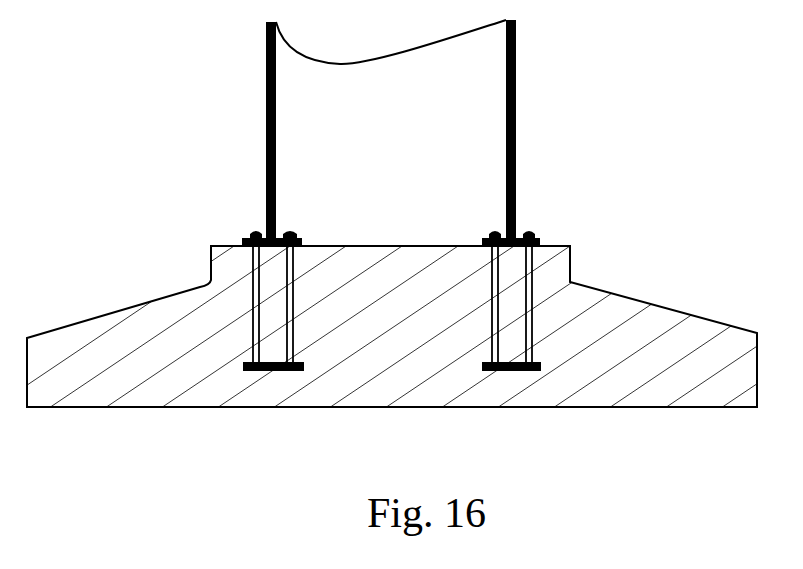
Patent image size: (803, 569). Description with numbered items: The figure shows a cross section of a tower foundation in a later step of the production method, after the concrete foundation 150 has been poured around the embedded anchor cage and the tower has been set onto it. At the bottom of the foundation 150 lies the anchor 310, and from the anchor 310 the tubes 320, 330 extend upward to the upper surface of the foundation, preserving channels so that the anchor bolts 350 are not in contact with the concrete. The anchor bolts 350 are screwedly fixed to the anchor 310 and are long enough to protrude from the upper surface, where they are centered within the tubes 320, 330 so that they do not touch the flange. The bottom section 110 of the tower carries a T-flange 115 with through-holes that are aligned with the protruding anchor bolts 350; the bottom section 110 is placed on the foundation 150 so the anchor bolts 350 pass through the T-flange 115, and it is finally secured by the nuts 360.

The bottom section 110 is at (268, 158).
The T-flange 115 is at (255, 223).
The foundation 150 is at (645, 327).
The anchor 310 is at (552, 350).
The tube 320 is at (533, 268).
The tube 330 is at (293, 270).
The anchor bolt 350 is at (495, 278).
The nut 360 is at (493, 230).